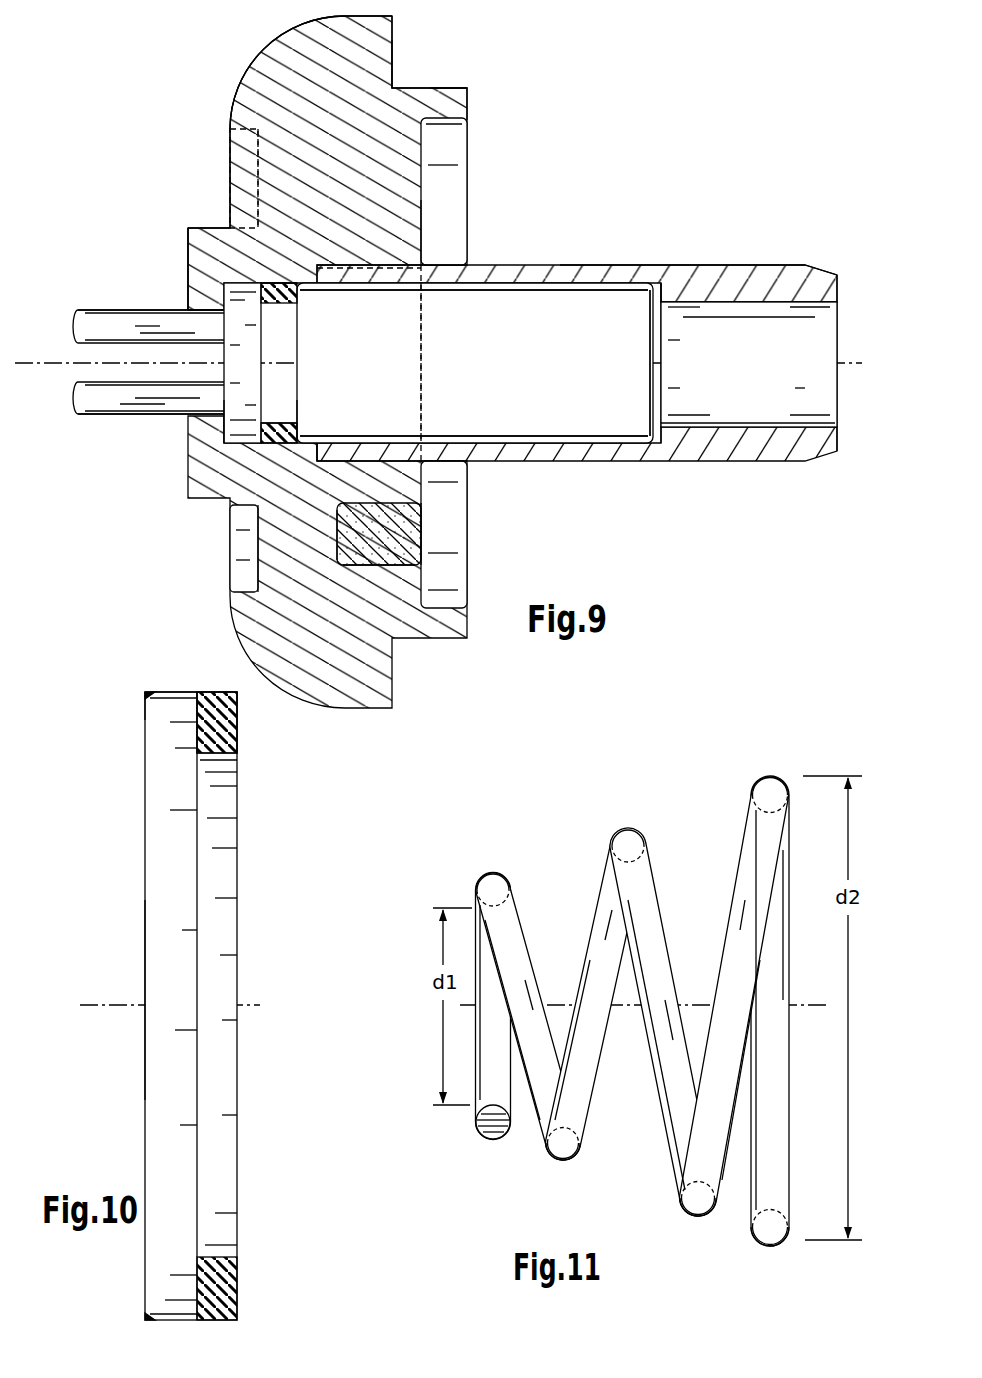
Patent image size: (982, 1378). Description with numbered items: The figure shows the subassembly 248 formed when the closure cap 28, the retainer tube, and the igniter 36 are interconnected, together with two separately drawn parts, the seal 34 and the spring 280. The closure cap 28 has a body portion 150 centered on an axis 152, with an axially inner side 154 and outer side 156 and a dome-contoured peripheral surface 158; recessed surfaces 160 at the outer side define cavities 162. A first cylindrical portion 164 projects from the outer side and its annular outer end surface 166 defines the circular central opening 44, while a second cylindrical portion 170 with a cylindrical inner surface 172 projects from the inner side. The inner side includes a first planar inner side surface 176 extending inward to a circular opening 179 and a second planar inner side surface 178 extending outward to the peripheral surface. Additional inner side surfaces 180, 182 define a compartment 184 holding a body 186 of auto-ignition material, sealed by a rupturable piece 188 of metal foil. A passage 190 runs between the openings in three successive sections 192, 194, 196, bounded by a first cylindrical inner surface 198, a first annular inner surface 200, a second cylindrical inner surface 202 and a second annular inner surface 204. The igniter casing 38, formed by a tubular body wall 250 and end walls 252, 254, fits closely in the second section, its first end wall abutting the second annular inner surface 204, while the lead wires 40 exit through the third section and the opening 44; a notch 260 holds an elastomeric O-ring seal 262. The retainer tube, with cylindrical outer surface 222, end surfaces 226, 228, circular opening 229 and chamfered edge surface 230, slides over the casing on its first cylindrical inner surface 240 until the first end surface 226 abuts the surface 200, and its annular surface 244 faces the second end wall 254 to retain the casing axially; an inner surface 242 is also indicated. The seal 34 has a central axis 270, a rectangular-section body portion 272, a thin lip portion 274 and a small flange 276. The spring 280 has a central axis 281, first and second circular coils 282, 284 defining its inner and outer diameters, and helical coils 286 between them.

In FIG. 9, the closure cap 28 is at (247, 72).
In FIG. 9, the body portion 150 is at (305, 64).
In FIG. 9, the inner side 154 is at (402, 47).
In FIG. 9, the outer side 156 is at (230, 200).
In FIG. 9, the peripheral surface 158 is at (258, 52).
In FIG. 9, the recessed surfaces 160 is at (250, 147).
In FIG. 9, the cavities 162 is at (243, 165).
In FIG. 9, the first cylindrical portion 164 is at (188, 228).
In FIG. 9, the annular outer end surface 166 is at (188, 266).
In FIG. 9, the second cylindrical portion 170 is at (467, 90).
In FIG. 9, the cylindrical inner surface 172 is at (450, 119).
In FIG. 9, the first planar inner side surface 176 is at (421, 238).
In FIG. 9, the second planar inner side surface 178 is at (400, 68).
In FIG. 9, the circular opening 179 is at (424, 318).
In FIG. 9, the inner side surface 180 is at (362, 555).
In FIG. 9, the inner side surface 182 is at (340, 535).
In FIG. 9, the compartment 184 is at (422, 518).
In FIG. 9, the body of auto-ignition material 186 is at (425, 540).
In FIG. 9, the rupturable piece of metal foil 188 is at (425, 565).
In FIG. 9, the passage 190 is at (392, 341).
In FIG. 9, the first section 192 is at (345, 325).
In FIG. 9, the second section 194 is at (243, 340).
In FIG. 9, the third section 196 is at (203, 357).
In FIG. 9, the first cylindrical inner surface 198 is at (350, 270).
In FIG. 9, the first annular inner surface 200 is at (320, 456).
In FIG. 9, the second cylindrical inner surface 202 is at (255, 440).
In FIG. 9, the second annular inner surface 204 is at (240, 440).
In FIG. 9, the cylindrical outer surface 222 is at (632, 265).
In FIG. 9, the first end surface 226 is at (318, 442).
In FIG. 9, the second end surface 228 is at (840, 290).
In FIG. 9, the circular opening 229 is at (840, 345).
In FIG. 9, the chamfered edge surface 230 is at (832, 265).
In FIG. 9, the first cylindrical inner surface 240 is at (528, 443).
In FIG. 9, the tube bore 242 is at (763, 302).
In FIG. 9, the annular surface 244 is at (652, 290).
In FIG. 9, the subassembly 248 is at (143, 107).
In FIG. 9, the tubular body wall 250 is at (550, 460).
In FIG. 9, the first end wall 252 is at (207, 395).
In FIG. 9, the second end wall 254 is at (663, 402).
In FIG. 9, the notch 260 is at (272, 282).
In FIG. 9, the O-ring seal 262 is at (285, 285).
In FIG. 9, the igniter 36 is at (586, 270).
In FIG. 9, the igniter casing 38 is at (603, 283).
In FIG. 9, the circular central opening 44 is at (186, 355).
In FIG. 9, the lead wires 40 is at (100, 332).
In FIG. 9, the axis 152 is at (113, 335).
In FIG. 10, the seal 34 is at (126, 845).
In FIG. 10, the central axis 270 is at (125, 1005).
In FIG. 10, the body portion 272 is at (230, 738).
In FIG. 10, the lip portion 274 is at (172, 690).
In FIG. 10, the flange 276 is at (157, 690).
In FIG. 11, the spring 280 is at (527, 857).
In FIG. 11, the central axis 281 is at (806, 1007).
In FIG. 11, the first circular coil 282 is at (505, 1142).
In FIG. 11, the second circular coil 284 is at (770, 1240).
In FIG. 11, the helical coils 286 is at (667, 1212).